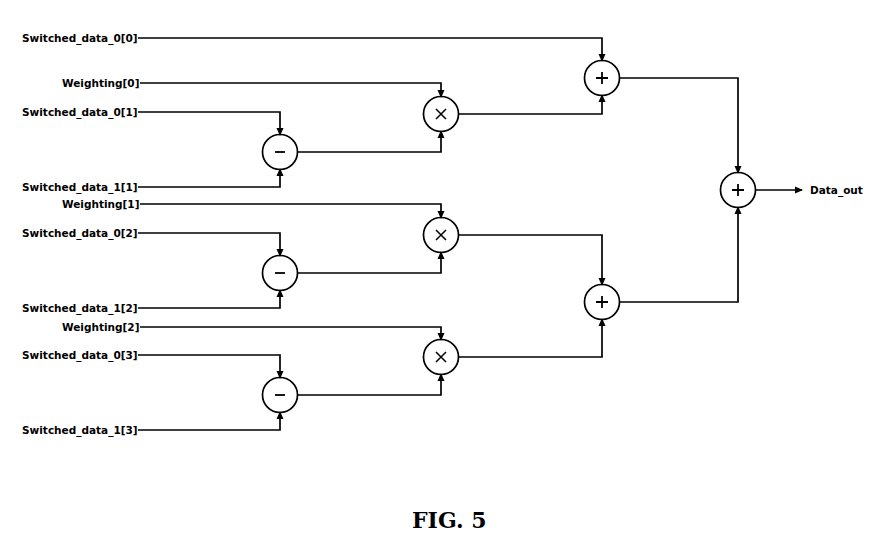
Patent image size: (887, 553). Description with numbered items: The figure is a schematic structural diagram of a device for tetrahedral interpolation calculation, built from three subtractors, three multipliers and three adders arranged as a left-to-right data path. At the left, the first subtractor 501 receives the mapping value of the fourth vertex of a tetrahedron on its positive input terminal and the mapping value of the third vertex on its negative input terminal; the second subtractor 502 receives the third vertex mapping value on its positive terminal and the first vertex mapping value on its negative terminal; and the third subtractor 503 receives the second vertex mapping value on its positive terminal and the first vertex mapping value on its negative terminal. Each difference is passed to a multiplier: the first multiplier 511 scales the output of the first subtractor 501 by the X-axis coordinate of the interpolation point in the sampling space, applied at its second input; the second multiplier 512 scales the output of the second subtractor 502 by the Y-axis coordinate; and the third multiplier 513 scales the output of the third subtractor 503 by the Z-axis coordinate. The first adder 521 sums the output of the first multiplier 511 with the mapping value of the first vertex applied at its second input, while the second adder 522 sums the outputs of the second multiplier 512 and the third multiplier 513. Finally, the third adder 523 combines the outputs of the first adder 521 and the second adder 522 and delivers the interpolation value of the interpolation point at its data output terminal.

The first subtractor 501 is at (293, 139).
The second subtractor 502 is at (293, 260).
The third subtractor 503 is at (293, 382).
The first multiplier 511 is at (454, 101).
The second multiplier 512 is at (454, 222).
The third multiplier 513 is at (454, 344).
The first adder 521 is at (615, 65).
The second adder 522 is at (615, 289).
The third adder 523 is at (751, 177).